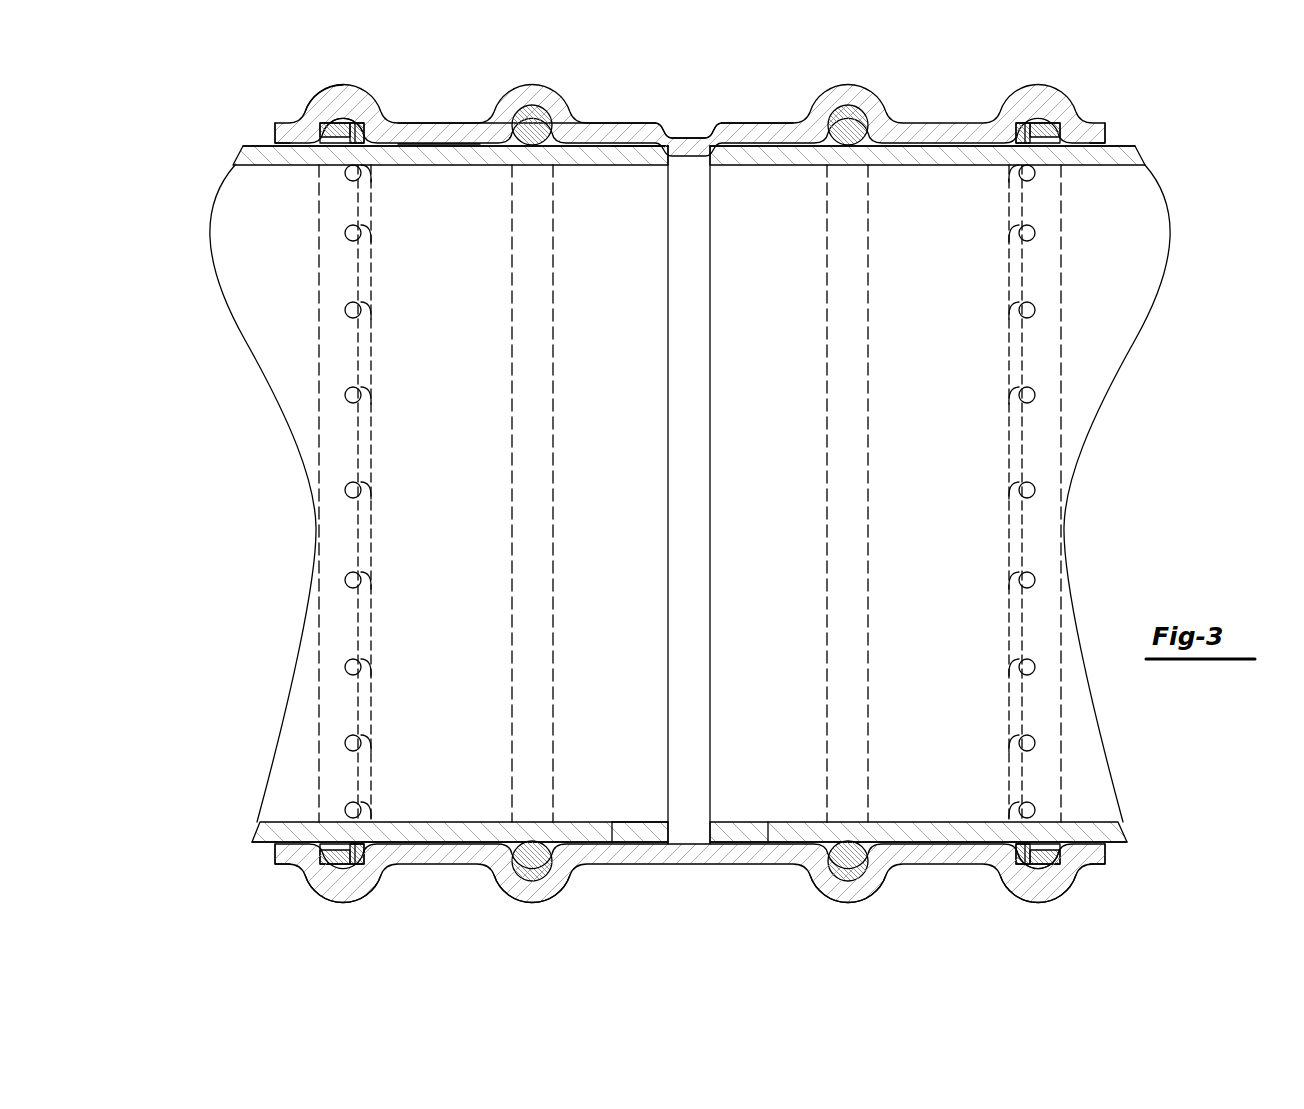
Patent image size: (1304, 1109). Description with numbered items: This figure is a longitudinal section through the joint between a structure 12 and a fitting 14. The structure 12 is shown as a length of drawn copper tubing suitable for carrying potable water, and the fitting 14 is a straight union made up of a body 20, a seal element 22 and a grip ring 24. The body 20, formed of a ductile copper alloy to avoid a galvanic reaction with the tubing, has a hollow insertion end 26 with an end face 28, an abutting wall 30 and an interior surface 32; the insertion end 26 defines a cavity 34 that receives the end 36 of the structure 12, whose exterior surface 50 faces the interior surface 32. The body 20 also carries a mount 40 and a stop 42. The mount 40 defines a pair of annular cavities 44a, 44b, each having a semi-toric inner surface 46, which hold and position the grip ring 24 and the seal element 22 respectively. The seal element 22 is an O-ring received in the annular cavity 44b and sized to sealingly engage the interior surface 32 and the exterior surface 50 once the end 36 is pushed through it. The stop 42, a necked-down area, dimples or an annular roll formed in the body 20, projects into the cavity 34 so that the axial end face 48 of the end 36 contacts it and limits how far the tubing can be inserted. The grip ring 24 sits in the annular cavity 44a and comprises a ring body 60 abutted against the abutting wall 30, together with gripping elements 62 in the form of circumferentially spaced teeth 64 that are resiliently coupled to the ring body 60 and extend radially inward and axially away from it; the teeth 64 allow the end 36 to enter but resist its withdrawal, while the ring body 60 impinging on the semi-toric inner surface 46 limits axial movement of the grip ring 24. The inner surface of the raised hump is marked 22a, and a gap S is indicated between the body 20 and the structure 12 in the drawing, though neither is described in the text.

The structure 12 is at (244, 158).
The fitting 14 is at (914, 91).
The body 20 is at (626, 126).
The seal element 22 is at (542, 114).
The inner surface of hump 22a is at (351, 110).
The grip ring 24 is at (336, 130).
The insertion end 26 is at (272, 132).
The end face 28 is at (1106, 132).
The abutting wall 30 is at (334, 118).
The interior surface 32 is at (613, 144).
The cavity 34 is at (611, 825).
The end 36 is at (572, 162).
The mount 40 is at (437, 114).
The stop 42 is at (686, 156).
The annular cavity 44a is at (350, 893).
The annular cavity 44b is at (534, 890).
The semi-toric inner surface 46 is at (320, 866).
The axial end face 48 is at (704, 158).
The exterior surface 50 is at (745, 147).
The ring body 60 is at (1043, 856).
The gripping elements 62 is at (372, 442).
The teeth 64 is at (372, 540).
The gap S is at (412, 148).